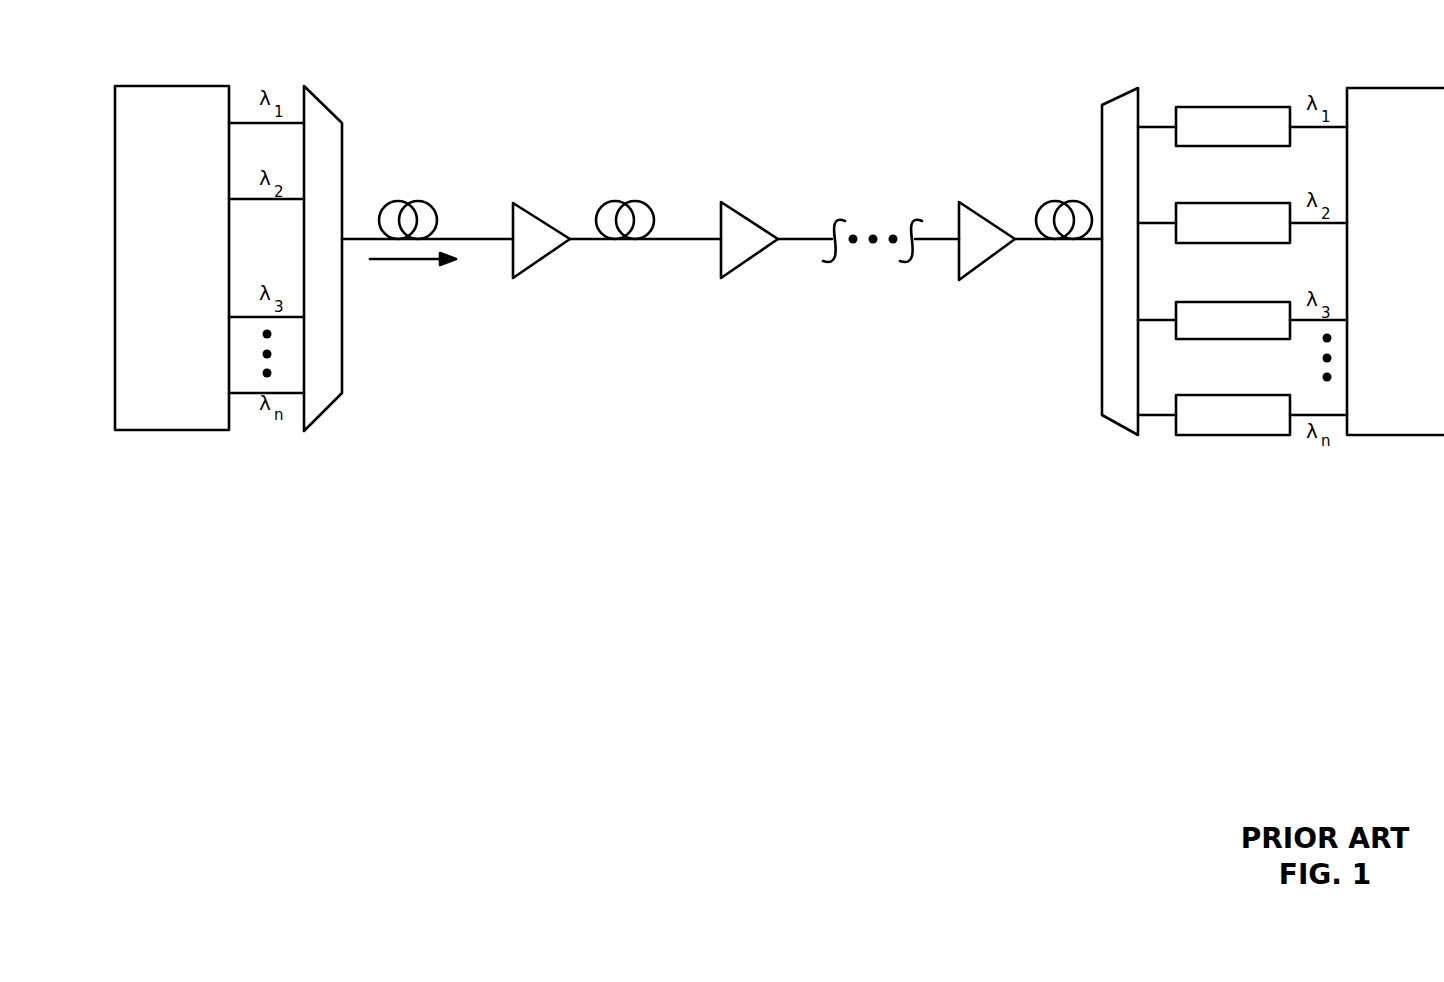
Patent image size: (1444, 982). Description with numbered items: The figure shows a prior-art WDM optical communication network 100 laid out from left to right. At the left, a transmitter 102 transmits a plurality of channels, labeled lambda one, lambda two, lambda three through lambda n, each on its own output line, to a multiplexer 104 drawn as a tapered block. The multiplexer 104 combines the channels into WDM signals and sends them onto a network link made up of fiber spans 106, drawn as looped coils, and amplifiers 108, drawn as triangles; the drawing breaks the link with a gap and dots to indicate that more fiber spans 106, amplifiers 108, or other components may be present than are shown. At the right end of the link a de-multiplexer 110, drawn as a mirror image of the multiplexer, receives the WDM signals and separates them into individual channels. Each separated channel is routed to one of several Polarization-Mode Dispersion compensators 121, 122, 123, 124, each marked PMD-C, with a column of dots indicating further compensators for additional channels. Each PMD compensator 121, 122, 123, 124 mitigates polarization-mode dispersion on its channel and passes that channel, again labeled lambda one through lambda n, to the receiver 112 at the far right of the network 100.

The WDM optical communication network 100 is at (486, 567).
The transmitter 102 is at (152, 154).
The multiplexer 104 is at (318, 92).
The fiber spans 106 is at (406, 201).
The amplifiers 108 is at (513, 278).
The de-multiplexer 110 is at (1107, 100).
The receiver 112 is at (1384, 192).
The Polarization-Mode Dispersion compensator 121 is at (1205, 107).
The Polarization-Mode Dispersion compensator 122 is at (1205, 203).
The Polarization-Mode Dispersion compensator 123 is at (1205, 302).
The Polarization-Mode Dispersion compensator 124 is at (1205, 395).